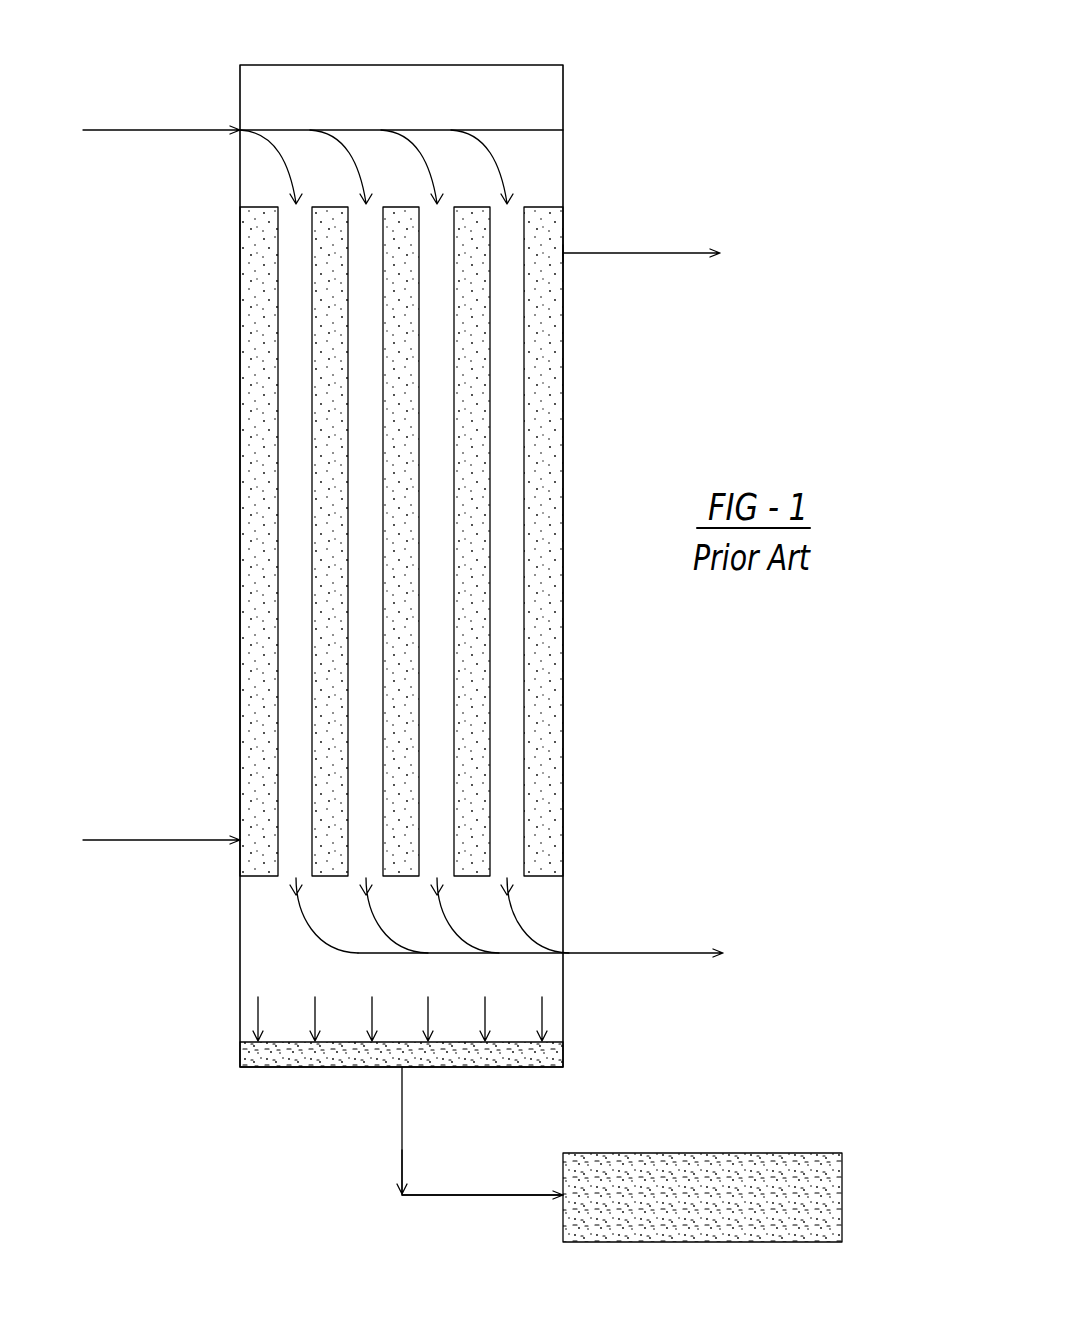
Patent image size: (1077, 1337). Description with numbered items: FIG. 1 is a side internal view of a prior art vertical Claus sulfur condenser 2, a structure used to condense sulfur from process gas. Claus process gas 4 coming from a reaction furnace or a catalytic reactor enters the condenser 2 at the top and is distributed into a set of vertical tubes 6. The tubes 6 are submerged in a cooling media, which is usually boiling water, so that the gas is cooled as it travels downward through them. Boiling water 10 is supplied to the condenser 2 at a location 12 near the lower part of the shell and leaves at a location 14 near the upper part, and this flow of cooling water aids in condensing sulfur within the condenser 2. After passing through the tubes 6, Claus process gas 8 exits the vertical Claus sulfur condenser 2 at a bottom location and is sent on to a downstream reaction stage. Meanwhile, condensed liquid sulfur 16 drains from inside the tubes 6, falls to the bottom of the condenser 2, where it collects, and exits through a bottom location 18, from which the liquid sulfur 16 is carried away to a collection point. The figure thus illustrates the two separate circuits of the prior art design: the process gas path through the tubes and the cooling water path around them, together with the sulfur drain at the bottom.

The vertical Claus sulfur condenser 2 is at (563, 122).
The Claus process gas 4 is at (185, 130).
The tubes 6 is at (198, 531).
The Claus process gas 8 is at (620, 953).
The boiling water 10 is at (633, 253).
The location 12 is at (240, 838).
The location 14 is at (563, 257).
The condensed liquid sulfur 16 is at (400, 1137).
The bottom location 18 is at (402, 1068).